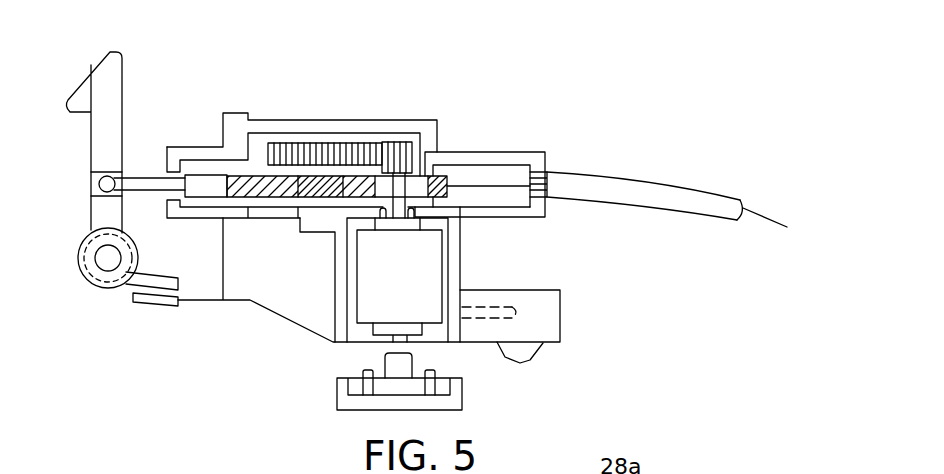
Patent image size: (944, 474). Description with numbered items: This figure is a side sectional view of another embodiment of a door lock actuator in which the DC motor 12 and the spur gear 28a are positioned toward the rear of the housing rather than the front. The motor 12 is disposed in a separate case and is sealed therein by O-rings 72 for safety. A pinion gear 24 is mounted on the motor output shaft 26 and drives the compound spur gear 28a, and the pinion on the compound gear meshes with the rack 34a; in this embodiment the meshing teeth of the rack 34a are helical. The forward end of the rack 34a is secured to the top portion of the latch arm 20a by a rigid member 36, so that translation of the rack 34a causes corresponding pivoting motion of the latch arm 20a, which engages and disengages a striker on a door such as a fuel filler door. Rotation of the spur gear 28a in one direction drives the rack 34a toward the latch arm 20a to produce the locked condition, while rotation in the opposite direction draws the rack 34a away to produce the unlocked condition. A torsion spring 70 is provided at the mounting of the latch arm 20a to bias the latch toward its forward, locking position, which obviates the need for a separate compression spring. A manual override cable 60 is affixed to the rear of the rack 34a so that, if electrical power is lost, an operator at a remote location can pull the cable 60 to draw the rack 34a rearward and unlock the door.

The DC motor 12 is at (442, 266).
The latch arm 20a is at (296, 192).
The pinion gear 24 is at (404, 178).
The motor output shaft 26 is at (427, 180).
The spur gear 28a is at (283, 146).
The rack 34a is at (234, 162).
The rigid member 36 is at (140, 177).
The manual override cable 60 is at (607, 173).
The torsion spring 70 is at (155, 272).
The O-rings 72 is at (416, 212).